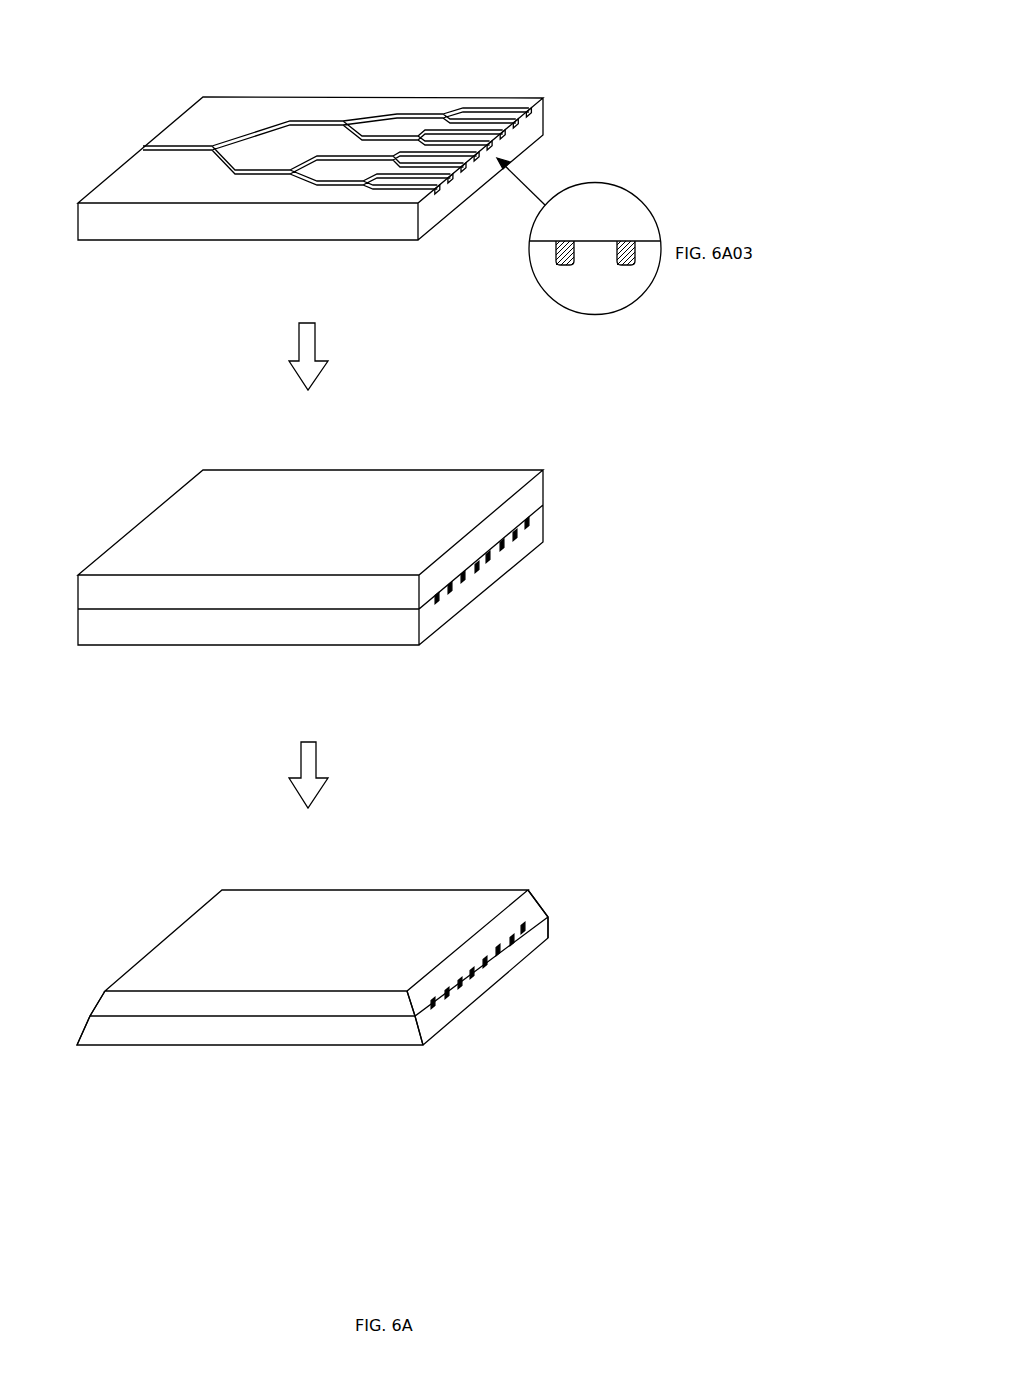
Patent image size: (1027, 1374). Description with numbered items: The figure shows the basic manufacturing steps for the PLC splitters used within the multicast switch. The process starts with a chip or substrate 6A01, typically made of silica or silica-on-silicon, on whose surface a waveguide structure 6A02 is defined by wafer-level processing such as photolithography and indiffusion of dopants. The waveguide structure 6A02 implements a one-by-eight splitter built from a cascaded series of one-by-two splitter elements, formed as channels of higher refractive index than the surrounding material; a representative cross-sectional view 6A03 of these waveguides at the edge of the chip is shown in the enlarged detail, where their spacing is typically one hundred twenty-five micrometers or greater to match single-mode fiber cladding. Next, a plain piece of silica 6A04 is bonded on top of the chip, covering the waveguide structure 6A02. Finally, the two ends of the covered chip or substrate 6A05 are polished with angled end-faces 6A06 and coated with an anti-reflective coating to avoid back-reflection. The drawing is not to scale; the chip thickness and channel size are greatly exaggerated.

The chip or substrate 6A01 is at (310, 156).
The waveguide structure 6A02 is at (245, 119).
The cross-sectional view of waveguides 6A03 is at (494, 560).
The plain piece of silica 6A04 is at (310, 557).
The covered chip or substrate 6A05 is at (312, 967).
The angled end-faces 6A06 is at (151, 946).